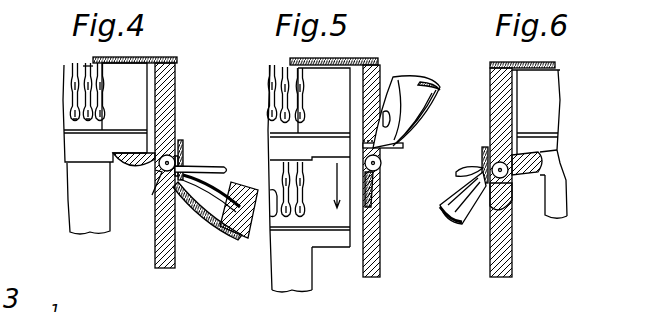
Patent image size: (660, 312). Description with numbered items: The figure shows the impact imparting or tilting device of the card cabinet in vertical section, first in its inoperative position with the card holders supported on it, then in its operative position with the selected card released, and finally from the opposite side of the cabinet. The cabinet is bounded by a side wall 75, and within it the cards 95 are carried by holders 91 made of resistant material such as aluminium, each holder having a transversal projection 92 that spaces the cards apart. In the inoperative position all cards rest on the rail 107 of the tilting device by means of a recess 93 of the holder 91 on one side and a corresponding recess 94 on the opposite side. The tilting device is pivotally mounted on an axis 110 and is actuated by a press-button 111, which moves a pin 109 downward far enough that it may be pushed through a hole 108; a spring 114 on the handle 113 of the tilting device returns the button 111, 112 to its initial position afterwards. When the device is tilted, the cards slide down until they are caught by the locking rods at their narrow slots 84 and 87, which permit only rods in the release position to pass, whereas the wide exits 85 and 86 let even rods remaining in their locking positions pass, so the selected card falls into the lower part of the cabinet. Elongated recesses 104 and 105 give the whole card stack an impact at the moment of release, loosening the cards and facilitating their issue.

In FIG. 4, the side wall 75 is at (168, 88).
In FIG. 5, the side wall 75 is at (378, 232).
In FIG. 4, the narrow slot 84 is at (80, 65).
In FIG. 4, the wide exit 85 is at (150, 58).
In FIG. 4, the wide exit 86 is at (100, 84).
In FIG. 4, the narrow slot 87 is at (85, 100).
In FIG. 4, the holder 91 is at (138, 75).
In FIG. 5, the holder 91 is at (280, 127).
In FIG. 6, the holder 91 is at (550, 107).
In FIG. 4, the transversal projection 92 is at (64, 138).
In FIG. 6, the transversal projection 92 is at (553, 133).
In FIG. 4, the recess 93 is at (116, 165).
In FIG. 5, the recess 93 is at (318, 250).
In FIG. 6, the recess 94 is at (540, 161).
In FIG. 4, the card 95 is at (69, 186).
In FIG. 5, the card 95 is at (305, 288).
In FIG. 6, the card 95 is at (568, 192).
In FIG. 4, the elongated recess 104 is at (72, 81).
In FIG. 4, the elongated recess 105 is at (73, 116).
In FIG. 4, the rail 107 is at (134, 156).
In FIG. 5, the rail 107 is at (380, 192).
In FIG. 6, the rail 107 is at (521, 178).
In FIG. 4, the hole 108 is at (183, 146).
In FIG. 4, the pin 109 is at (185, 141).
In FIG. 5, the pin 109 is at (403, 148).
In FIG. 6, the pin 109 is at (476, 147).
In FIG. 4, the axis 110 is at (166, 166).
In FIG. 5, the axis 110 is at (381, 165).
In FIG. 6, the axis 110 is at (500, 170).
In FIG. 4, the press-button 111 is at (208, 172).
In FIG. 5, the press-button 111 is at (387, 112).
In FIG. 6, the press-button 111 is at (458, 173).
In FIG. 4, the button 112 is at (232, 188).
In FIG. 4, the handle 113 is at (226, 232).
In FIG. 5, the handle 113 is at (422, 92).
In FIG. 6, the handle 113 is at (451, 209).
In FIG. 4, the spring 114 is at (199, 208).